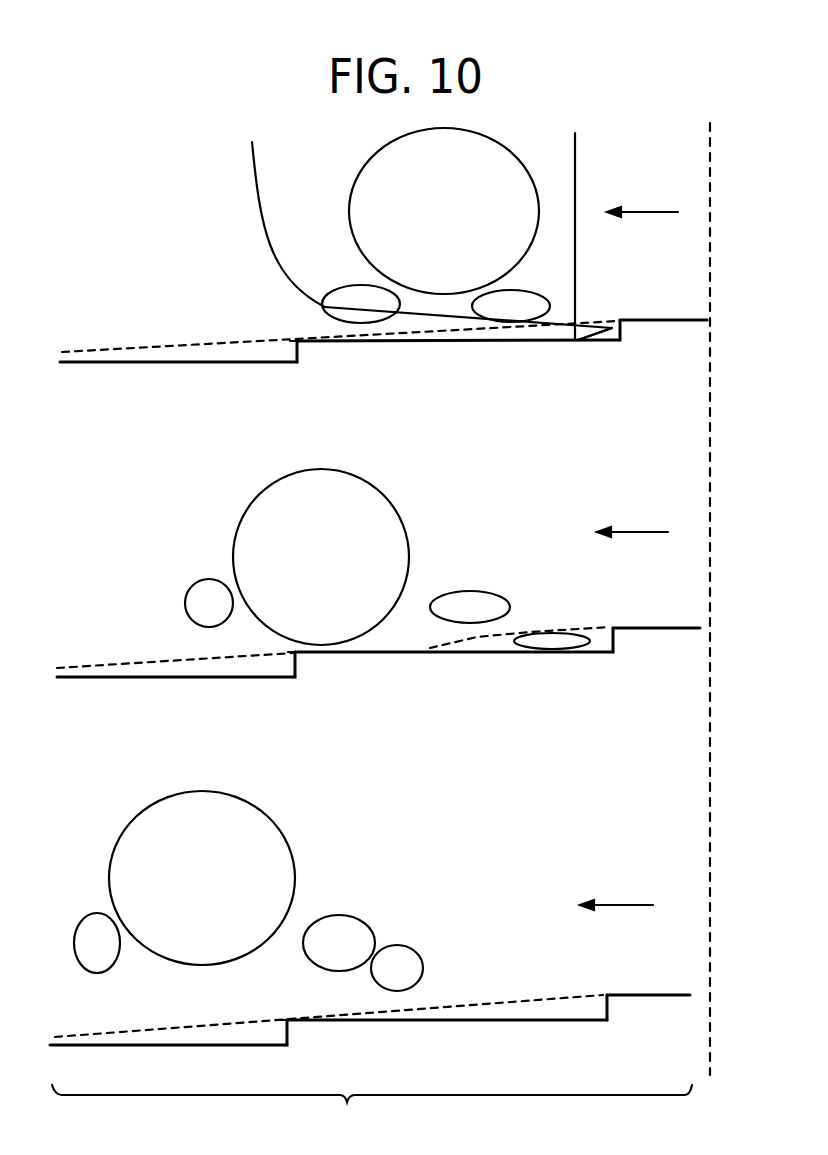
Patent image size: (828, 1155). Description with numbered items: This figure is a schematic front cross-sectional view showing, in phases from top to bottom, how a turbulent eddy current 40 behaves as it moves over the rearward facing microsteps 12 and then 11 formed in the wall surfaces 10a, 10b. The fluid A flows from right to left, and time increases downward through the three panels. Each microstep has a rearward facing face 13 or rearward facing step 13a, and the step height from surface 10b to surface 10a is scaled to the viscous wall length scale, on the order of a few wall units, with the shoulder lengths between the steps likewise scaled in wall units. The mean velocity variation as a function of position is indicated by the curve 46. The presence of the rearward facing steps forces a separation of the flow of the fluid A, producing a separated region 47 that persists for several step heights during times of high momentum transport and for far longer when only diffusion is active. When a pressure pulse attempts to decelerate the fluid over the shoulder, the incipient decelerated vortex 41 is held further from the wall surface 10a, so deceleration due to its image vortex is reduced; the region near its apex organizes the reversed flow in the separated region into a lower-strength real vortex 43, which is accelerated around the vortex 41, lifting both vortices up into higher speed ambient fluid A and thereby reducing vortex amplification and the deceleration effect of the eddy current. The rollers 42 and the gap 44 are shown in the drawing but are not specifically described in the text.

The wall surface 10a is at (423, 343).
The wall surface 10b is at (153, 363).
The microstep 11 is at (297, 340).
The microstep 12 is at (622, 320).
The rearward facing face 13 is at (622, 327).
The rearward facing step 13a is at (300, 352).
The eddy current 40 is at (398, 193).
The incipient decelerated vortex 41 is at (520, 302).
The second auxiliary roller 42 is at (348, 295).
The vortex 43 is at (553, 642).
The sheet inlet gap 44 is at (515, 337).
The mean velocity variation 46 is at (266, 210).
The separated region 47 is at (208, 343).
The fluid A is at (648, 208).